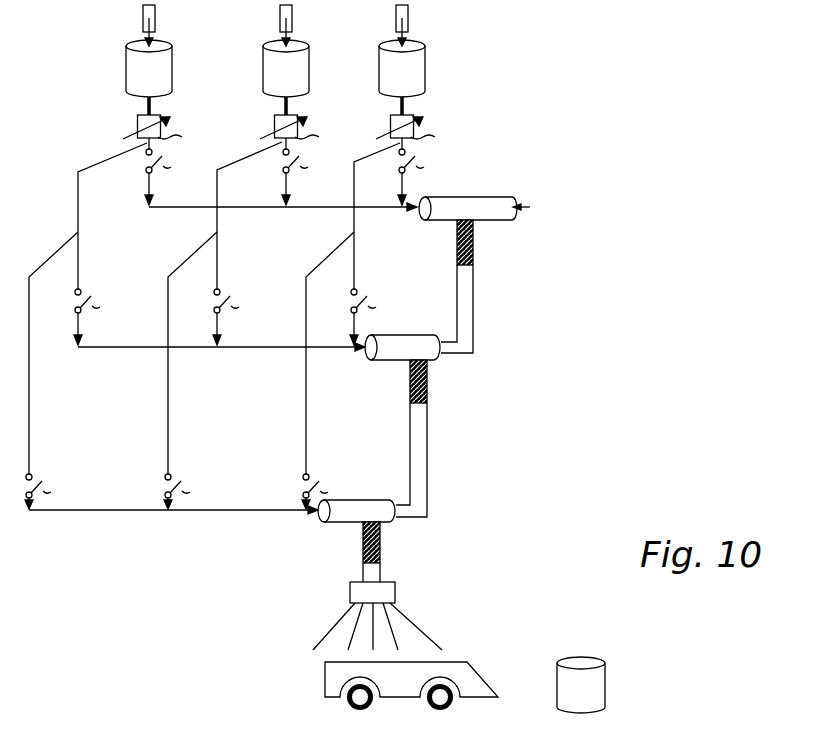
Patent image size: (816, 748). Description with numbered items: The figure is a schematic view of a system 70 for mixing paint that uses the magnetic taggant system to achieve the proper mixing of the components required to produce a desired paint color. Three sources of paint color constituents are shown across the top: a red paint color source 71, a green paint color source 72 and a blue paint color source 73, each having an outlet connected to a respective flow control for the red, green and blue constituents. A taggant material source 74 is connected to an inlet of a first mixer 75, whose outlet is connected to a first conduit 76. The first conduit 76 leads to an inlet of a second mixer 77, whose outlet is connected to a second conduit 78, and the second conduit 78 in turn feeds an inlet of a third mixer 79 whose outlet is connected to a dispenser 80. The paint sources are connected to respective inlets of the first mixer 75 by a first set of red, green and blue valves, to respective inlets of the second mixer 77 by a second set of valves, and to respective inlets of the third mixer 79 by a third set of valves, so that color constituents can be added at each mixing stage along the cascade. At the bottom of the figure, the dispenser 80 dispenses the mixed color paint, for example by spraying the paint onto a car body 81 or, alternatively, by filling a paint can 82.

The paint mixing system 70 is at (588, 137).
The red paint color source 71 is at (126, 80).
The green paint color source 72 is at (265, 56).
The blue paint color source 73 is at (425, 82).
The taggant material source 74 is at (523, 213).
The first mixer 75 is at (452, 202).
The first conduit 76 is at (467, 305).
The second mixer 77 is at (387, 353).
The second conduit 78 is at (422, 430).
The third mixer 79 is at (335, 517).
The dispenser 80 is at (360, 595).
The car body 81 is at (330, 667).
The paint can 82 is at (598, 675).